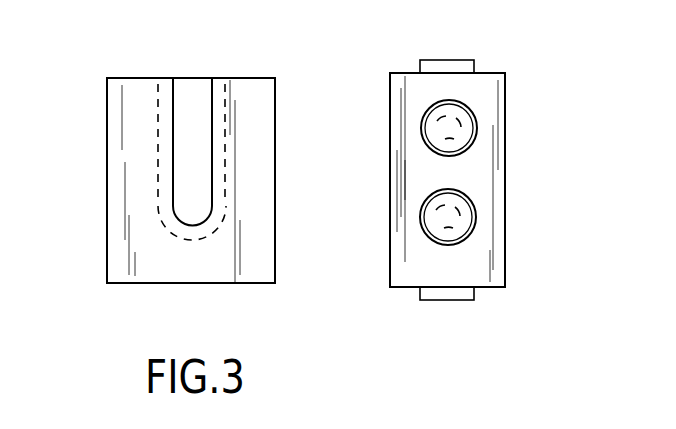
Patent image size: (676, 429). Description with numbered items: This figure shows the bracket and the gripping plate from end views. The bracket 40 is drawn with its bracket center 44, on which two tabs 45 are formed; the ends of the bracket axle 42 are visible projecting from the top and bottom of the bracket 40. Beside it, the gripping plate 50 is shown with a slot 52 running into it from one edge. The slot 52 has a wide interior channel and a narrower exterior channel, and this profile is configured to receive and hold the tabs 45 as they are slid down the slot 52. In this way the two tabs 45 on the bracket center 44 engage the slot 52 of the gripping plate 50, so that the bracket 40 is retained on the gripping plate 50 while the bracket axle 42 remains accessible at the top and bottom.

The bracket 40 is at (505, 187).
The bracket axle 42 is at (452, 60).
The bracket center 44 is at (414, 178).
The tabs 45 is at (422, 108).
The gripping plate 50 is at (107, 233).
The slot 52 is at (173, 160).